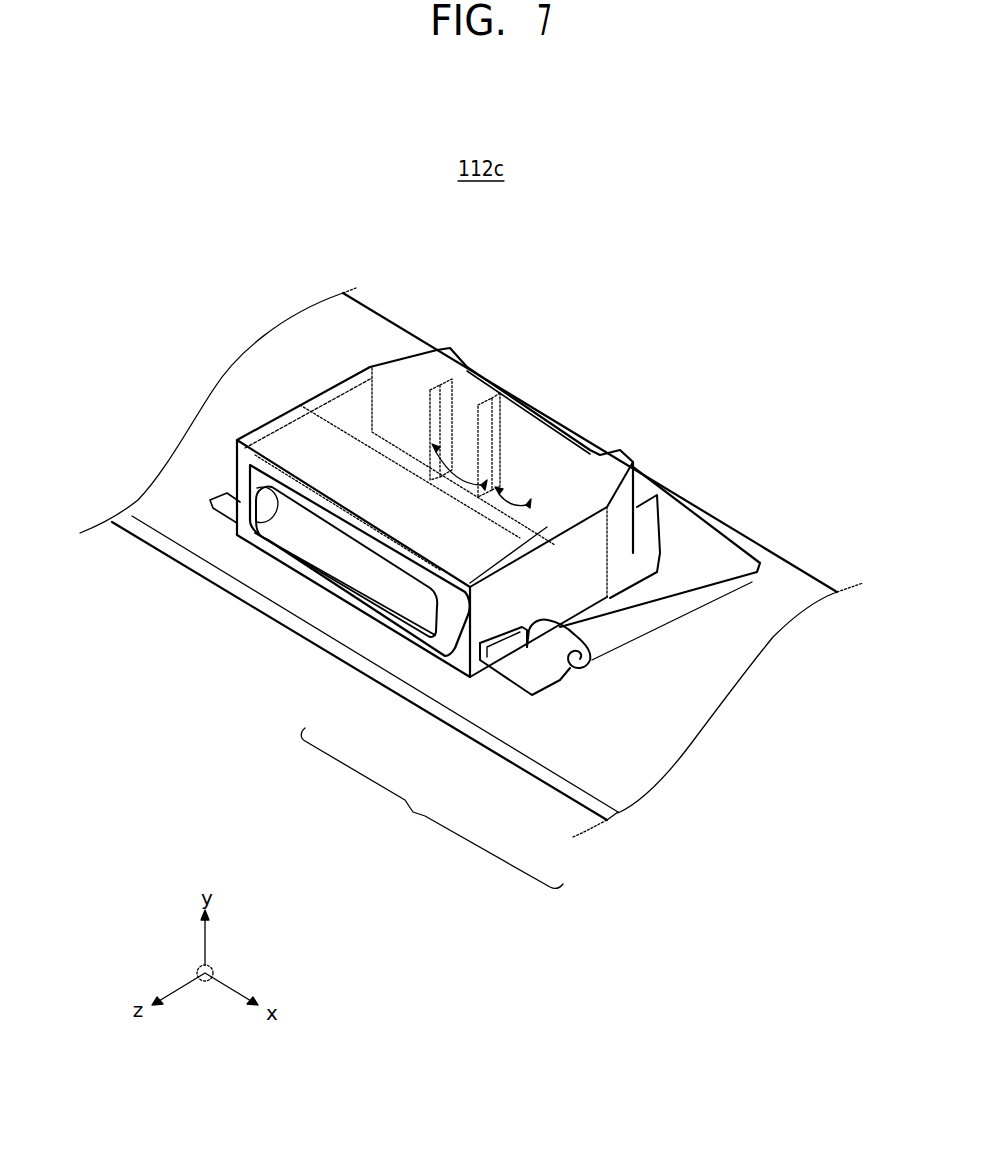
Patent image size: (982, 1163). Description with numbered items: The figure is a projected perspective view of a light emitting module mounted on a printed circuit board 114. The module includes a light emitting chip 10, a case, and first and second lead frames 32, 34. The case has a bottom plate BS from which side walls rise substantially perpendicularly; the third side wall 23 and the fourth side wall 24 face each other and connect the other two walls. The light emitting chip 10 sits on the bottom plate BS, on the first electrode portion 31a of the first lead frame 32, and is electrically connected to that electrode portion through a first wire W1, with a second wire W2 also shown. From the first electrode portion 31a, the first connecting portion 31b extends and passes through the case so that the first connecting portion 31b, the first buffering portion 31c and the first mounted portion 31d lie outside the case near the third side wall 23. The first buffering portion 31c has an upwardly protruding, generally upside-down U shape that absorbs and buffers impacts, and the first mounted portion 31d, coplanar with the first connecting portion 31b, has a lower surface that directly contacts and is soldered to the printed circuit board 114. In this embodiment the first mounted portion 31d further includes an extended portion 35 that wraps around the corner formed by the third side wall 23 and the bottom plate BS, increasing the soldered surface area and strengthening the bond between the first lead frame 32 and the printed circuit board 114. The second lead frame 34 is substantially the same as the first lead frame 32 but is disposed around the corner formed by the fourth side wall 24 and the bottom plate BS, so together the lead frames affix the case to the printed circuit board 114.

The light emitting chip 10 is at (478, 483).
The third side wall 23 is at (545, 558).
The fourth side wall 24 is at (280, 417).
The first electrode portion 31a is at (500, 563).
The first connecting portion 31b is at (523, 677).
The first buffering portion 31c is at (620, 637).
The first mounted portion 31d is at (637, 660).
The first lead frame 32 is at (432, 808).
The second lead frame 34 is at (434, 372).
The extended portion 35 is at (717, 553).
The printed circuit board 114 is at (760, 627).
The first wire W1 is at (520, 500).
The second wire W2 is at (440, 447).
The bottom plate BS is at (563, 430).